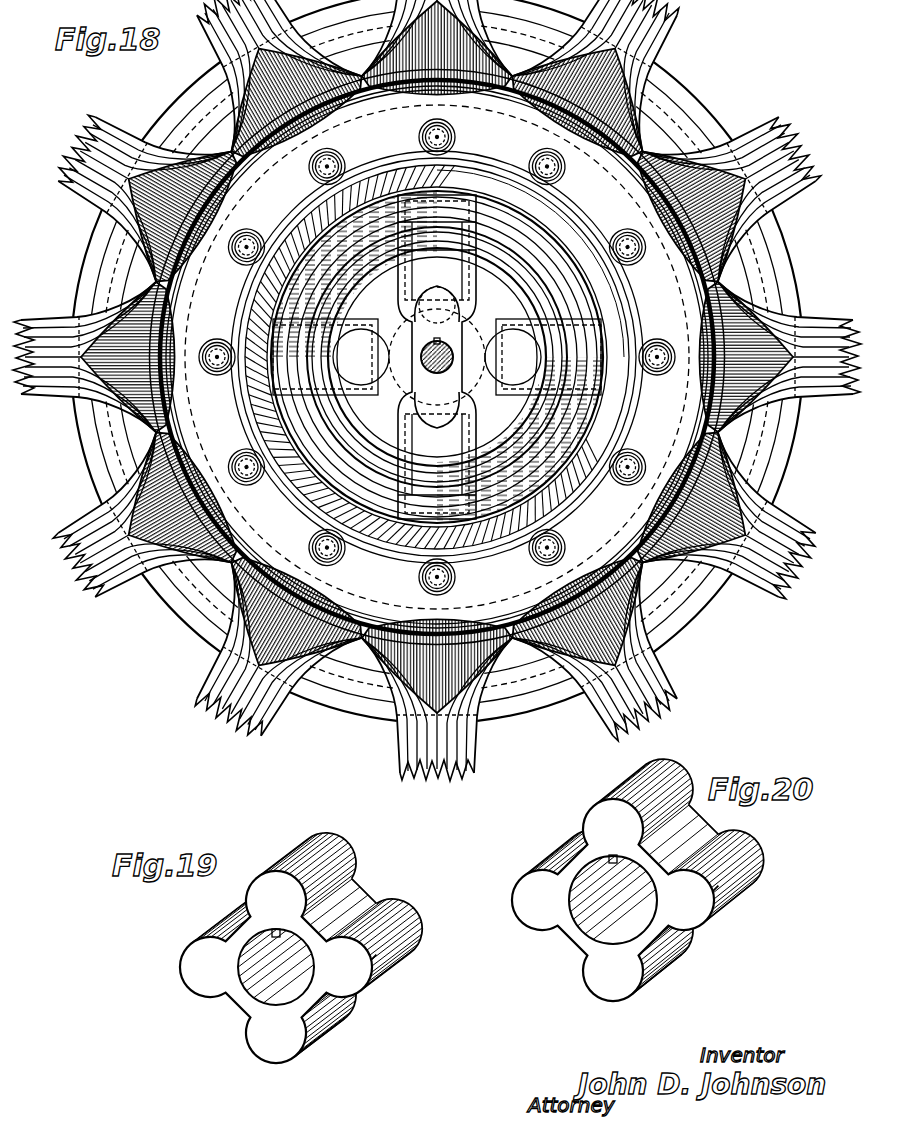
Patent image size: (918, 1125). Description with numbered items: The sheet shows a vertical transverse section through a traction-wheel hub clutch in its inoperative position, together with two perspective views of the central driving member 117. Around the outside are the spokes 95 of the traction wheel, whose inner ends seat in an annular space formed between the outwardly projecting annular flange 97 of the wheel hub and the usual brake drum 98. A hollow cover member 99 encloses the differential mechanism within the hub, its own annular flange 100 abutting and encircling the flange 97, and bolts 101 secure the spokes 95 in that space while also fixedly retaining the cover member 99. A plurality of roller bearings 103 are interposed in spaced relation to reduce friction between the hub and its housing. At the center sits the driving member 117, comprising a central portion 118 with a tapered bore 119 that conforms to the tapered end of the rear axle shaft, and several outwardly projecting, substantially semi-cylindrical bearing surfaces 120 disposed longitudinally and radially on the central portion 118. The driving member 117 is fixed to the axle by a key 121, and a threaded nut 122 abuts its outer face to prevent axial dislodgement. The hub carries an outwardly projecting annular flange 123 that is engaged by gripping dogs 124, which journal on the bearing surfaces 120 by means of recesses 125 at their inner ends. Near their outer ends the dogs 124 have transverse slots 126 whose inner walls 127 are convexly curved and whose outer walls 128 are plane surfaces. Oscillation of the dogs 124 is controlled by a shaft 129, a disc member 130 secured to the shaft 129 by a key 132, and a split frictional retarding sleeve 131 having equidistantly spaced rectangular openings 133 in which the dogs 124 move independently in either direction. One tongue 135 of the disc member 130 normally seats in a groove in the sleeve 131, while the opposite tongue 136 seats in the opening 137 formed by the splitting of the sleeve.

In FIG. 18, the spokes 95 is at (772, 145).
In FIG. 18, the annular flange 97 is at (600, 432).
In FIG. 18, the brake drum 98 is at (180, 592).
In FIG. 18, the cover member 99 is at (300, 222).
In FIG. 18, the annular flange 100 is at (150, 447).
In FIG. 18, the bolts 101 is at (418, 133).
In FIG. 18, the roller bearings 103 is at (497, 250).
In FIG. 19, the driving member 117 is at (232, 1030).
In FIG. 20, the driving member 117 is at (680, 972).
In FIG. 19, the central portion 118 is at (325, 1022).
In FIG. 20, the central portion 118 is at (578, 942).
In FIG. 19, the tapered bore 119 is at (262, 992).
In FIG. 20, the tapered bore 119 is at (600, 886).
In FIG. 18, the bearing surfaces 120 is at (243, 397).
In FIG. 19, the bearing surfaces 120 is at (302, 872).
In FIG. 20, the bearing surfaces 120 is at (642, 805).
In FIG. 18, the key 121 is at (513, 357).
In FIG. 18, the threaded nut 122 is at (437, 297).
In FIG. 18, the annular flange 123 is at (323, 303).
In FIG. 18, the gripping dogs 124 is at (462, 195).
In FIG. 18, the recess 125 is at (323, 333).
In FIG. 18, the transverse slots 126 is at (410, 178).
In FIG. 18, the inner walls 127 is at (486, 381).
In FIG. 18, the outer walls 128 is at (475, 195).
In FIG. 18, the shaft 129 is at (437, 421).
In FIG. 18, the disc member 130 is at (437, 400).
In FIG. 18, the split frictional retarding sleeve 131 is at (525, 270).
In FIG. 18, the key 132 is at (361, 357).
In FIG. 18, the rectangular openings 133 is at (545, 287).
In FIG. 18, the tongue 135 is at (455, 540).
In FIG. 18, the tongue 136 is at (437, 261).
In FIG. 18, the opening 137 is at (437, 357).